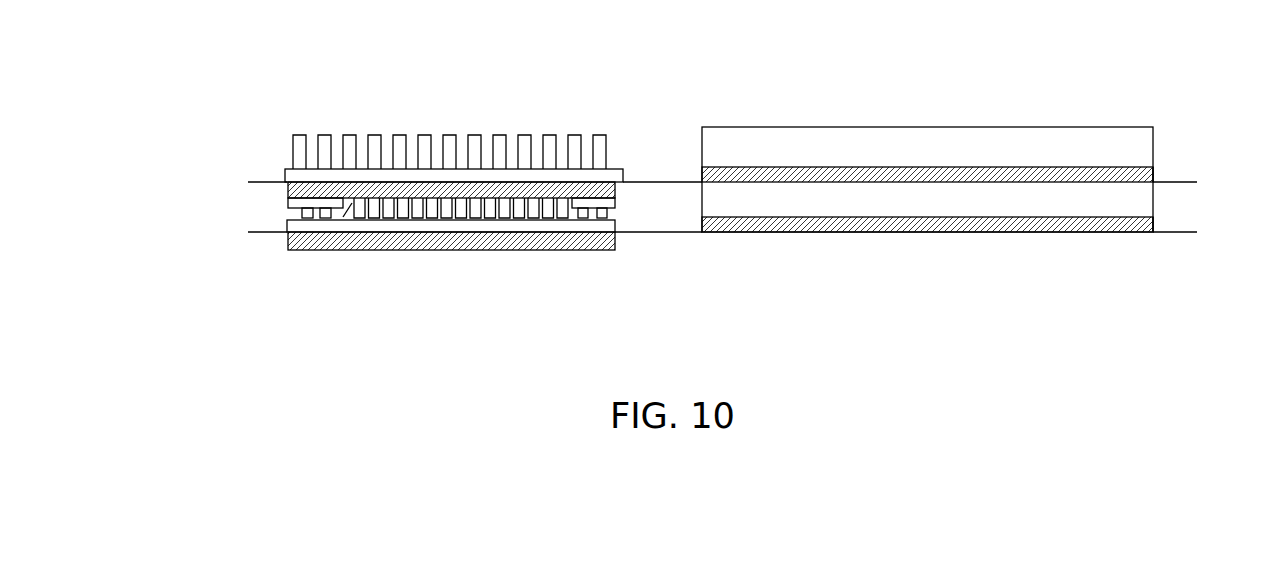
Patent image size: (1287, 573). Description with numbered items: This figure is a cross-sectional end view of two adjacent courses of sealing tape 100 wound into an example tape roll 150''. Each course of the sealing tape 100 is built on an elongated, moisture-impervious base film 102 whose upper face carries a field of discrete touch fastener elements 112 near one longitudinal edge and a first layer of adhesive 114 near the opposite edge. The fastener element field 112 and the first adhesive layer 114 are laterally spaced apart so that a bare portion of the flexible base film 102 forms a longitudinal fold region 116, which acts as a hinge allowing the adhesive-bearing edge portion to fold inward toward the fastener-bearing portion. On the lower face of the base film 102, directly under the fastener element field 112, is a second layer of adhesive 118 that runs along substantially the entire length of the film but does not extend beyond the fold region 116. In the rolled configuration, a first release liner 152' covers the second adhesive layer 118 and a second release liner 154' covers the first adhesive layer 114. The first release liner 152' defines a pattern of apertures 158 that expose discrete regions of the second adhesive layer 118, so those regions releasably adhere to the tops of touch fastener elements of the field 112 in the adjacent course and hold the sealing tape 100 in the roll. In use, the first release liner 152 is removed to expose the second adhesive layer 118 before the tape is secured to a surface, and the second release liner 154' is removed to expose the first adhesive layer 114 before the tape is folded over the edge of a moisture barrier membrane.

The sealing tape 100 is at (232, 206).
The base film 102 is at (257, 182).
The field of discrete touch fastener elements 112 is at (425, 123).
The first layer of adhesive 114 is at (1168, 170).
The longitudinal fold region 116 is at (657, 167).
The second layer of adhesive 118 is at (282, 190).
The tape roll 150'' is at (927, 125).
The first release liner 152 is at (919, 259).
The first release liner 152' is at (605, 257).
The second release liner 154' is at (927, 112).
The apertures 158 is at (332, 233).